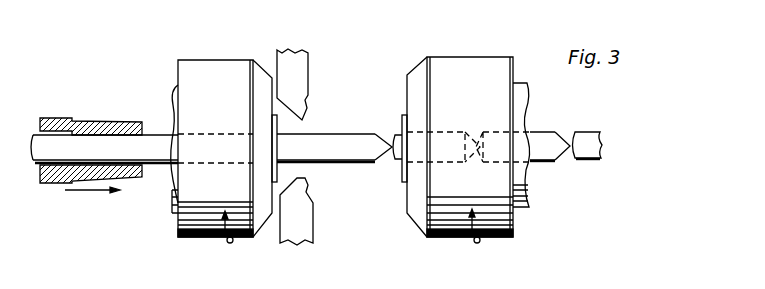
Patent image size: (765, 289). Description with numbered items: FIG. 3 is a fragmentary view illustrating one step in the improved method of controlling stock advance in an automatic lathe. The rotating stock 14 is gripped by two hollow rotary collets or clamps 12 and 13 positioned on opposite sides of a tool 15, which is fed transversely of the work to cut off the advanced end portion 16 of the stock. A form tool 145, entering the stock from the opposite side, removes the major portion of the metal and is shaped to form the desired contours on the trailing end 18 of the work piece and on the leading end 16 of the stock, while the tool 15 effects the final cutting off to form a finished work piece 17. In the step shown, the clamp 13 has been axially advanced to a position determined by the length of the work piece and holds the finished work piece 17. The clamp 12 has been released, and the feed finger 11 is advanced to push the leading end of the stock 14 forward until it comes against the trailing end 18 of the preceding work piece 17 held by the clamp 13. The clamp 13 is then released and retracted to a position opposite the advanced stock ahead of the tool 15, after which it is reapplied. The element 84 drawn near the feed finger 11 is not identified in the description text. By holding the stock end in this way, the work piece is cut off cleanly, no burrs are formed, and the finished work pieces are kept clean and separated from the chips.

The tapered nut 11 is at (86, 118).
The left housing 12 is at (200, 238).
The right housing 13 is at (440, 238).
The shaft 14 is at (66, 158).
The upper workpiece 15 is at (298, 84).
The lower workpiece 145 is at (312, 220).
The intermediate shaft 16 is at (364, 140).
The output shaft 17 is at (444, 128).
The coupling end 18 is at (394, 159).
The lower nut 84 is at (119, 177).